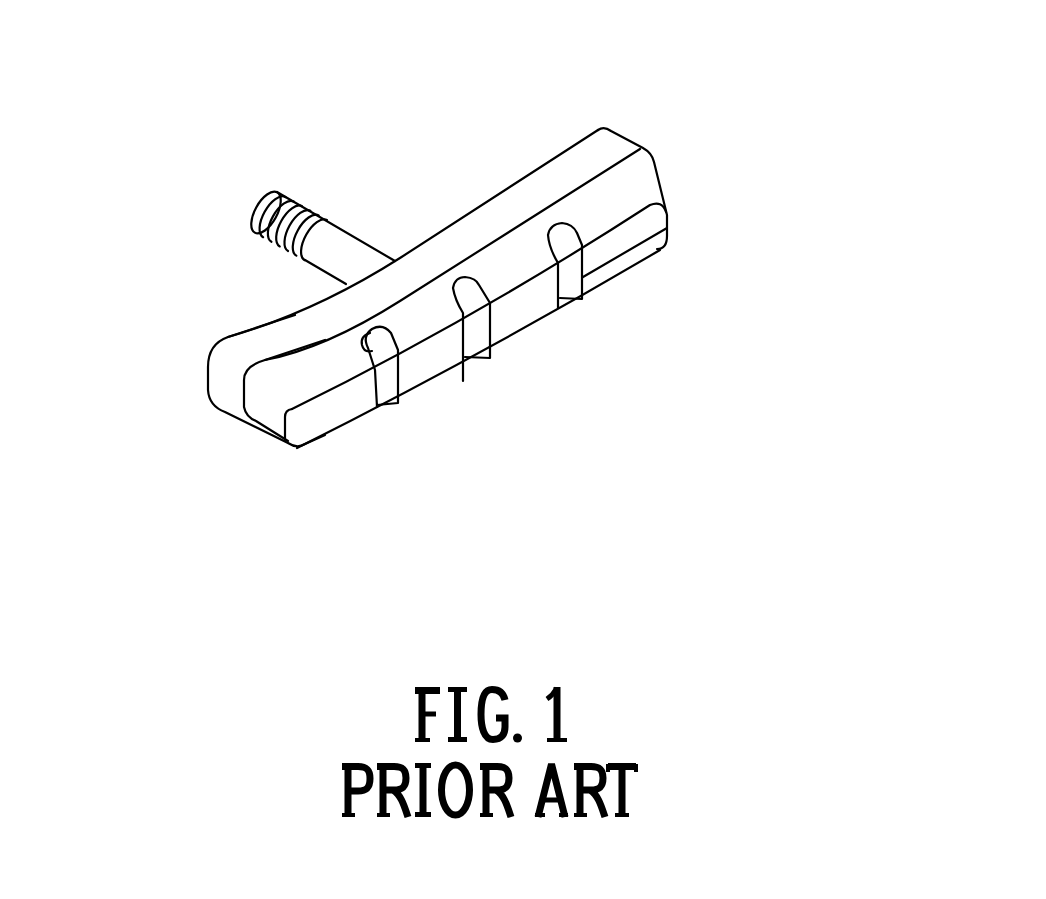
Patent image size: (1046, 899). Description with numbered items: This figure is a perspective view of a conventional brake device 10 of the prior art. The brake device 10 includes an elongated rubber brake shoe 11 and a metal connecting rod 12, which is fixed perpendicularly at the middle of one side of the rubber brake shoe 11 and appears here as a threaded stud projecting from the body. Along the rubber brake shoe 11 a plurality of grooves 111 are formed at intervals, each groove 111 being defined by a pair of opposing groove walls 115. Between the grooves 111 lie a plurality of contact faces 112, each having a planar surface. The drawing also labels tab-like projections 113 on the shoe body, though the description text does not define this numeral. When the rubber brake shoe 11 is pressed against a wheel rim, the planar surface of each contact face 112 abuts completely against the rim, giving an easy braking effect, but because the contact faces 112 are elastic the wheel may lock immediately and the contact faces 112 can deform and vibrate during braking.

The brake device 10 is at (503, 186).
The rubber brake shoe 11 is at (627, 147).
The connecting rod 12 is at (300, 200).
The grooves 111 is at (655, 182).
The contact faces 112 is at (627, 250).
The retaining tab 113 is at (560, 299).
The groove walls 115 is at (373, 333).